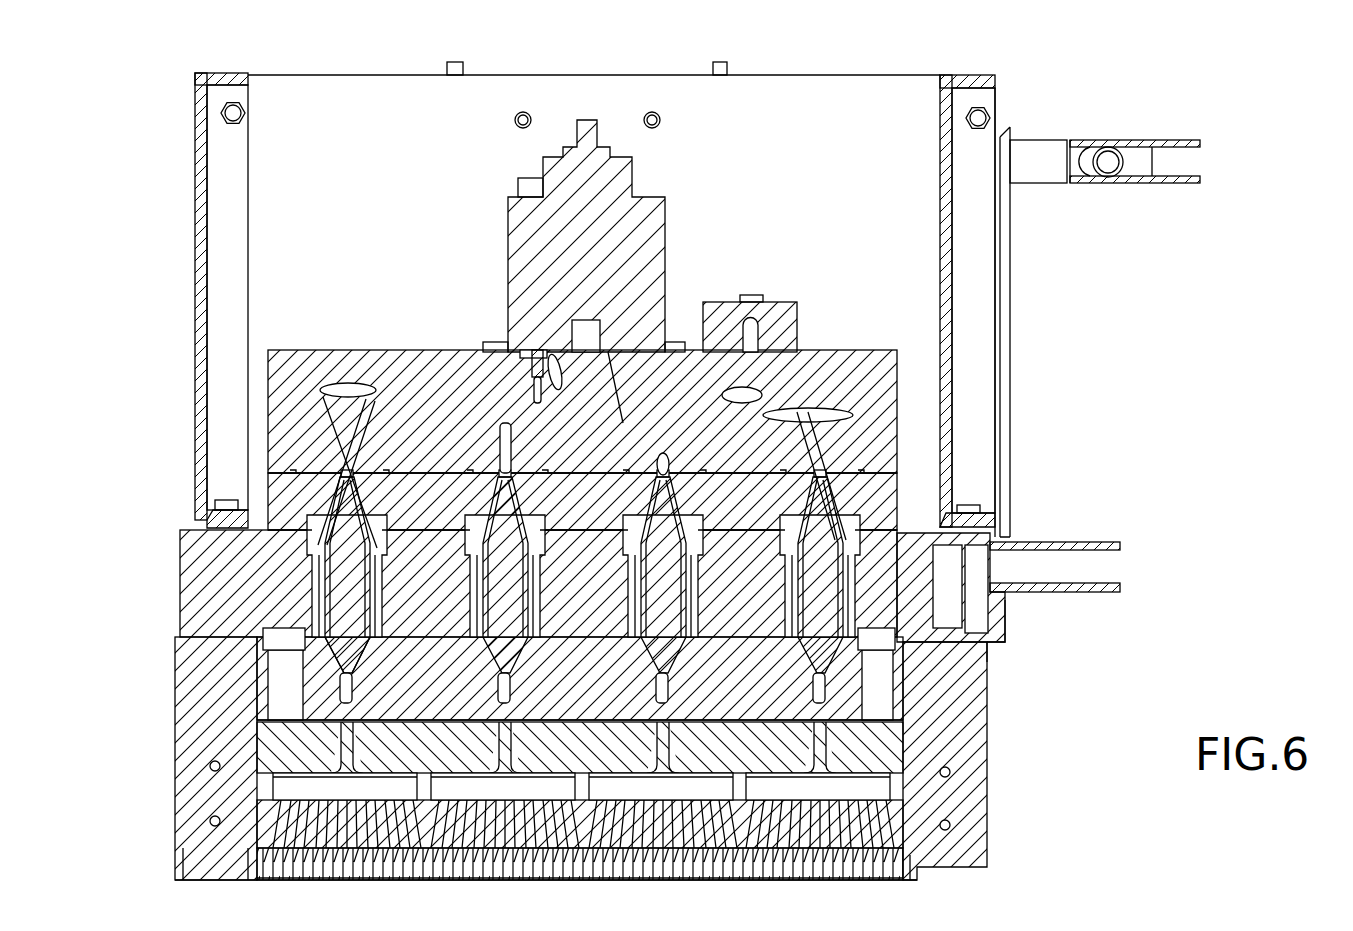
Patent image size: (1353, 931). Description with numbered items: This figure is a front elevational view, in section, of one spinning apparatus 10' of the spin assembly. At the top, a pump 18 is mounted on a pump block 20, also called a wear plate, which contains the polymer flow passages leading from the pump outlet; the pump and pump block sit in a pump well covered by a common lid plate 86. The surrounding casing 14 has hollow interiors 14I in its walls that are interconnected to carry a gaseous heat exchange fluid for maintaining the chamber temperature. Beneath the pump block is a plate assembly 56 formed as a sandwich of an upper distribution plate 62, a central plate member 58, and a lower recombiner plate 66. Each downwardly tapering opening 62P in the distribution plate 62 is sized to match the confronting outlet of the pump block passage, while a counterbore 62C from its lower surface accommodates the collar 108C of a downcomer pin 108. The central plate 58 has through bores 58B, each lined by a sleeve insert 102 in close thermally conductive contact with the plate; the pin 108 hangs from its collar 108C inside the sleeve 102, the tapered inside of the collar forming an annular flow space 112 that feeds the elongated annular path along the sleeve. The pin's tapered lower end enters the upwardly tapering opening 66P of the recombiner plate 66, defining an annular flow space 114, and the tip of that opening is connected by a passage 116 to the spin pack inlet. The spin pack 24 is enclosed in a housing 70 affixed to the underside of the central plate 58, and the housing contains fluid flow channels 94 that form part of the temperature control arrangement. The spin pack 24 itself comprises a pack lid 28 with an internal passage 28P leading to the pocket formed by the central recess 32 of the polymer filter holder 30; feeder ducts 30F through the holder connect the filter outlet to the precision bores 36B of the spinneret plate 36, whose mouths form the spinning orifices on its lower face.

The spinning apparatus 10' is at (360, 101).
The lid plate 86 is at (793, 75).
The casing 14 is at (195, 262).
The hollow interiors 14I is at (978, 292).
The pump 18 is at (680, 247).
The pump block 20 is at (833, 352).
The collar 108C is at (322, 540).
The annular flow space 112 is at (392, 488).
The opening 62P is at (888, 463).
The distribution plate member 62 is at (880, 490).
The counterbore 62C is at (900, 505).
The downcomer pin 108 is at (835, 565).
The sleeve insert 102 is at (308, 572).
The central plate member 58 is at (887, 583).
The through bore 58B is at (945, 622).
The plate assembly 56 is at (998, 646).
The opening 66P is at (335, 660).
The passage 116 is at (340, 690).
The housing 70 is at (960, 688).
The annular flow space 114 is at (843, 707).
The recombiner plate member 66 is at (830, 740).
The spin pack 24 is at (250, 747).
The fluid flow channels 94 is at (950, 825).
The central recess 32 is at (290, 785).
The pack lid 28 is at (880, 758).
The internal passage 28P is at (817, 787).
The polymer filter holder 30 is at (893, 827).
The feeder ducts 30F is at (873, 843).
The spinneret plate 36 is at (873, 875).
The bores 36B is at (877, 873).